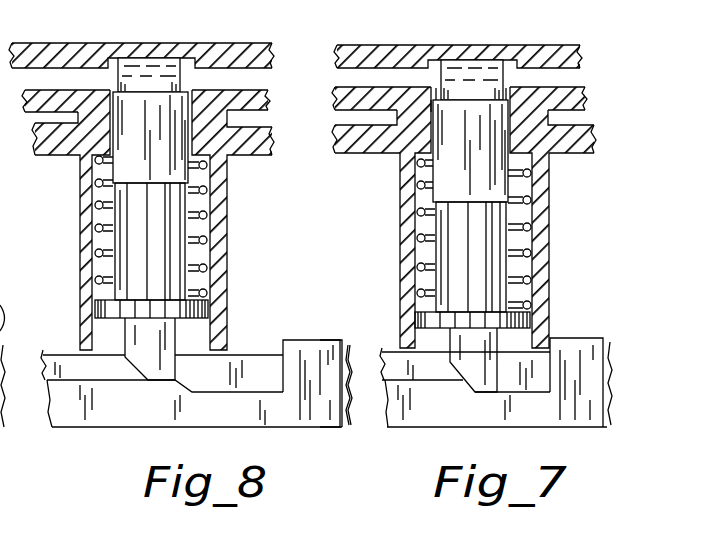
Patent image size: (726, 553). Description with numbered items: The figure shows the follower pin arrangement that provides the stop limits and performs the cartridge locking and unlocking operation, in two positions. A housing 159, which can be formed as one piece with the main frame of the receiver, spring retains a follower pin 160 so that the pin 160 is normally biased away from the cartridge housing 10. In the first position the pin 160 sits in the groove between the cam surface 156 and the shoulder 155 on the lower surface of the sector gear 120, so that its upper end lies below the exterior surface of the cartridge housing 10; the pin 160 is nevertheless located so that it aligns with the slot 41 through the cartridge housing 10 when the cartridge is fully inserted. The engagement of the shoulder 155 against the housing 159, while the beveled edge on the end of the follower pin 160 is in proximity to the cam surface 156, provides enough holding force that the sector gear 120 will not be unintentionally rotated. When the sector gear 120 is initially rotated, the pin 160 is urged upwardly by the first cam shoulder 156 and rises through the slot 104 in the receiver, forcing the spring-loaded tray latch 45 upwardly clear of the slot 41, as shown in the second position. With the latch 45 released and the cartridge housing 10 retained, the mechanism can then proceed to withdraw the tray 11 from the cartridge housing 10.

In FIG. 8, the cartridge housing 10 is at (24, 100).
In FIG. 7, the cartridge housing 10 is at (334, 97).
In FIG. 8, the tray 11 is at (230, 50).
In FIG. 7, the tray 11 is at (380, 53).
In FIG. 7, the slot 41 is at (438, 97).
In FIG. 8, the spring-loaded arm 45 is at (137, 68).
In FIG. 7, the spring-loaded arm 45 is at (482, 80).
In FIG. 7, the slot 104 is at (432, 112).
In FIG. 8, the sector gear 120 is at (293, 413).
In FIG. 7, the sector gear 120 is at (567, 425).
In FIG. 8, the shoulder 155 is at (323, 340).
In FIG. 7, the shoulder 155 is at (580, 353).
In FIG. 8, the cam surface 156 is at (192, 392).
In FIG. 7, the cam surface 156 is at (464, 390).
In FIG. 8, the housing 159 is at (80, 247).
In FIG. 7, the housing 159 is at (400, 252).
In FIG. 8, the follower pin 160 is at (163, 233).
In FIG. 7, the follower pin 160 is at (460, 360).